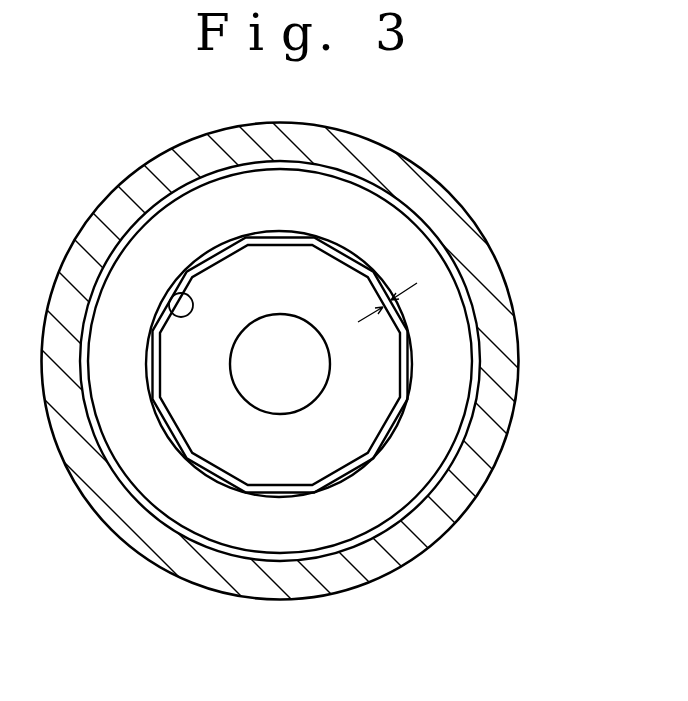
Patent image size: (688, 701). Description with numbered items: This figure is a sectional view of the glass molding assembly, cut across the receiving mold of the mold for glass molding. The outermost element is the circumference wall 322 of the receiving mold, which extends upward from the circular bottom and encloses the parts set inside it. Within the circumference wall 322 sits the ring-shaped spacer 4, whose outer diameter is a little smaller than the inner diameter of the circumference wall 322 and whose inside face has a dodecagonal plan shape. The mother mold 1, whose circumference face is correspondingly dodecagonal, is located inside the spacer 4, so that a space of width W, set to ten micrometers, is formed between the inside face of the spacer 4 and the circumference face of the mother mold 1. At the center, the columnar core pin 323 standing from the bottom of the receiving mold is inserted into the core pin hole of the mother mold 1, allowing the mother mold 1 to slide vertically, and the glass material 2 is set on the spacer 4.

The mother mold 1 is at (380, 390).
The glass material 2 is at (182, 208).
The spacer 4 is at (190, 318).
The circumference wall 322 is at (368, 138).
The core pin 323 is at (280, 398).
The width W is at (407, 320).